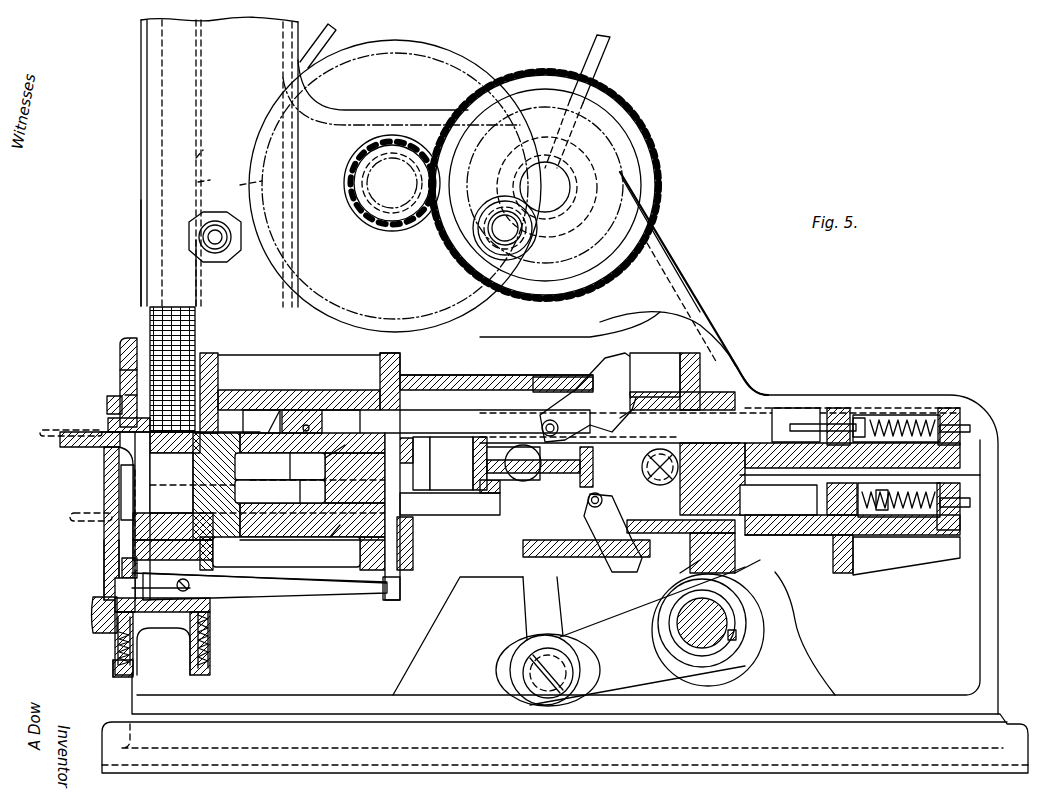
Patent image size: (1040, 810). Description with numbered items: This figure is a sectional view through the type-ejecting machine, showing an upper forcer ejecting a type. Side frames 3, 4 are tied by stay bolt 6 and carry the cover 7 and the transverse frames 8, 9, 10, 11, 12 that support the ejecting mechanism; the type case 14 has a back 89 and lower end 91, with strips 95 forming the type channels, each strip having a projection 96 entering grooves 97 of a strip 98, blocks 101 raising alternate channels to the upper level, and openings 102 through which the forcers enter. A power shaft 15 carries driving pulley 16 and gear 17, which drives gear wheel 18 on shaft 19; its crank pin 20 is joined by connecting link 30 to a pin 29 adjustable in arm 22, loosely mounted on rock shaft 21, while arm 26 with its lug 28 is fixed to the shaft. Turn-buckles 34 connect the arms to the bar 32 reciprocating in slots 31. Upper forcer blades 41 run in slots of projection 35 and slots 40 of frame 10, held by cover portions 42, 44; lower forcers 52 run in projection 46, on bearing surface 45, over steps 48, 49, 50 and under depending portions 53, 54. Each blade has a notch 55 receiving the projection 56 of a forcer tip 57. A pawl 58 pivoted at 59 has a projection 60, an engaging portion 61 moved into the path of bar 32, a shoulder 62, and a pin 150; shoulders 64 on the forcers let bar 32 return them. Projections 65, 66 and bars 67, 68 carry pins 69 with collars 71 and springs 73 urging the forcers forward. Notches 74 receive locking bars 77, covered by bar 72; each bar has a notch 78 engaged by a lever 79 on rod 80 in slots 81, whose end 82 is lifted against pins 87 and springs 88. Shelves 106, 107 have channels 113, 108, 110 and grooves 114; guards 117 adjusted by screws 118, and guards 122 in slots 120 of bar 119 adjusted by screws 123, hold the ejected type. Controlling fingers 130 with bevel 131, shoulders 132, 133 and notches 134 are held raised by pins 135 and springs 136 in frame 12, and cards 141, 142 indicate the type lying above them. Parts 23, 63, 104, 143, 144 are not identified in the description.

The side frame 3 is at (812, 665).
The side frame 4 is at (725, 323).
The stay bolt 6 is at (217, 232).
The cover 7 is at (570, 373).
The transverse frame 8 is at (790, 410).
The transverse frame 9 is at (785, 532).
The transverse frame 10 is at (292, 448).
The transverse frame 11 is at (308, 535).
The transverse frame 12 is at (175, 640).
The type case 14 is at (228, 337).
The power shaft 15 is at (392, 183).
The driving pulley 16 is at (440, 46).
The gear 17 is at (396, 228).
The gear wheel 18 is at (648, 140).
The shaft 19 is at (565, 190).
The crank pin 20 is at (520, 238).
The rock shaft 21 is at (690, 628).
The arm 22 is at (612, 600).
The link 23 is at (705, 578).
The arm 26 is at (740, 572).
The lug 28 is at (720, 575).
The pin 29 is at (545, 690).
The connecting link 30 is at (527, 598).
The rectangular slots 31 is at (460, 455).
The bar 32 is at (500, 485).
The turn-buckles 34 is at (720, 428).
The projection 35 is at (740, 392).
The slots 40 is at (255, 410).
The upper forcer blades 41 is at (495, 411).
The cover portion 42 is at (745, 375).
The cover portion 44 is at (228, 390).
The bearing surface 45 is at (851, 538).
The transverse projection 46 is at (778, 500).
The transverse step 48 is at (331, 540).
The transverse step 49 is at (292, 491).
The transverse step 50 is at (280, 491).
The lower forcers 52 is at (480, 508).
The depending portion 53 is at (320, 464).
The depending portion 54 is at (280, 466).
The notch 55 is at (306, 425).
The projection 56 is at (335, 410).
The forcer tip 57 is at (269, 401).
The pawl 58 is at (591, 469).
The pivot 59 is at (558, 422).
The projection 60 is at (643, 373).
The engaging portion 61 is at (641, 454).
The shoulder 62 is at (660, 505).
The guide block 63 is at (629, 463).
The shoulders 64 is at (510, 420).
The projection 65 is at (962, 405).
The projection 66 is at (965, 485).
The bar 67 is at (862, 418).
The bar 68 is at (880, 490).
The pins 69 is at (838, 408).
The collars 71 is at (880, 418).
The bar 72 is at (425, 528).
The springs 73 is at (920, 420).
The notches 74 is at (400, 420).
The locking bars 77 is at (430, 418).
The notch 78 is at (400, 585).
The levers 79 is at (292, 585).
The rod 80 is at (235, 550).
The slots 81 is at (168, 592).
The lever end 82 is at (115, 620).
The pins 87 is at (212, 622).
The springs 88 is at (210, 648).
The back portion 89 is at (198, 300).
The lower end 91 is at (225, 541).
The strips 95 is at (150, 270).
The projection 96 is at (210, 180).
The grooves 97 is at (205, 150).
The strip 98 is at (260, 185).
The blocks 101 is at (195, 483).
The openings 102 is at (225, 380).
The block 104 is at (115, 585).
The upper shelf 106 is at (105, 463).
The lower shelf 107 is at (117, 545).
The grooves 108 is at (105, 530).
The channels 110 is at (130, 558).
The channels 113 is at (70, 434).
The grooves 114 is at (122, 397).
The guard pieces 117 is at (110, 518).
The screws 118 is at (120, 495).
The bar 119 is at (118, 345).
The slots 120 is at (122, 375).
The guard pieces 122 is at (110, 425).
The screws 123 is at (108, 405).
The controlling fingers 130 is at (133, 488).
The bevel 131 is at (75, 460).
The shoulder 132 is at (100, 445).
The shoulder 133 is at (113, 635).
The notches 134 is at (100, 603).
The pins 135 is at (115, 655).
The springs 136 is at (115, 672).
The card 141 is at (122, 478).
The card 142 is at (122, 565).
The sleeve 143 is at (175, 452).
The collar 144 is at (173, 527).
The pin 150 is at (623, 363).